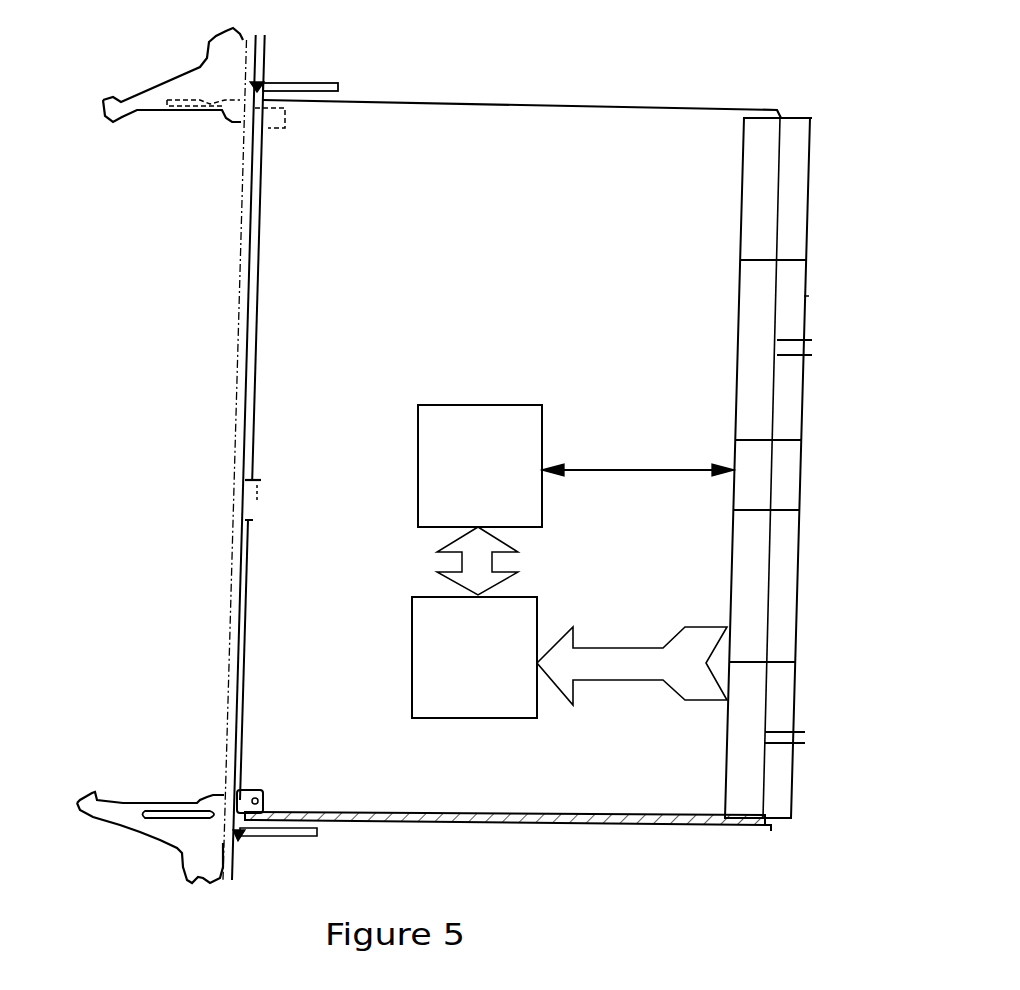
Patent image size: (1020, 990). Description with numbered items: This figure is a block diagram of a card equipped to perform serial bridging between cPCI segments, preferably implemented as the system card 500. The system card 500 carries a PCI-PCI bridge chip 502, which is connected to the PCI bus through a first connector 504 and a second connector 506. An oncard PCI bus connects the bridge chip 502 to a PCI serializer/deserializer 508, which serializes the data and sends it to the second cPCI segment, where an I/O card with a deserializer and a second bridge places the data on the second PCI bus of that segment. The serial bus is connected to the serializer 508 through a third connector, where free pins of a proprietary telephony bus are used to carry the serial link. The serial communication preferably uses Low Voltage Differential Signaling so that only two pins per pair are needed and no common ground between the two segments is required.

The system card 500 is at (583, 103).
The PCI-PCI bridge chip 502 is at (412, 650).
The connector J1 504 is at (768, 765).
The connector J2 506 is at (769, 613).
The PCI serializer/deserializer 508 is at (418, 468).